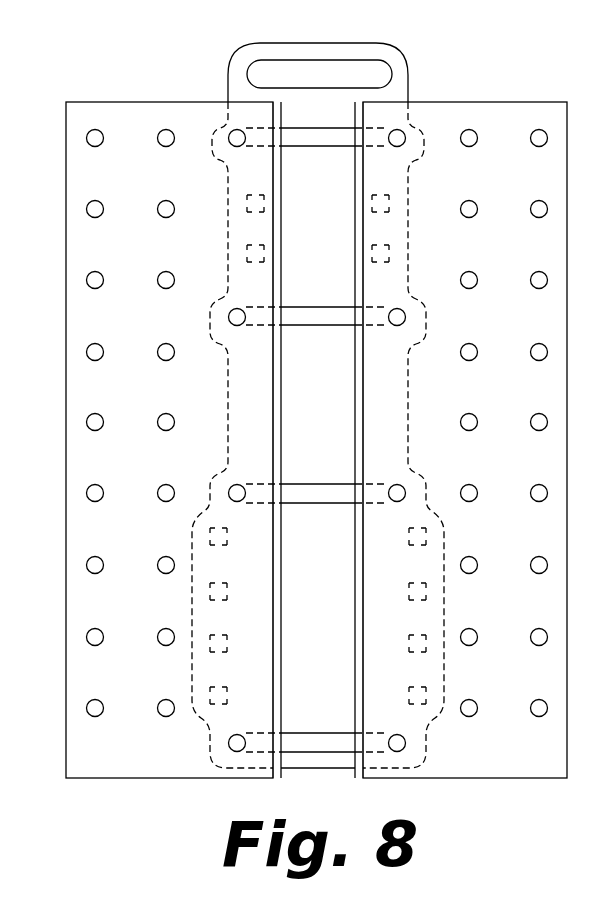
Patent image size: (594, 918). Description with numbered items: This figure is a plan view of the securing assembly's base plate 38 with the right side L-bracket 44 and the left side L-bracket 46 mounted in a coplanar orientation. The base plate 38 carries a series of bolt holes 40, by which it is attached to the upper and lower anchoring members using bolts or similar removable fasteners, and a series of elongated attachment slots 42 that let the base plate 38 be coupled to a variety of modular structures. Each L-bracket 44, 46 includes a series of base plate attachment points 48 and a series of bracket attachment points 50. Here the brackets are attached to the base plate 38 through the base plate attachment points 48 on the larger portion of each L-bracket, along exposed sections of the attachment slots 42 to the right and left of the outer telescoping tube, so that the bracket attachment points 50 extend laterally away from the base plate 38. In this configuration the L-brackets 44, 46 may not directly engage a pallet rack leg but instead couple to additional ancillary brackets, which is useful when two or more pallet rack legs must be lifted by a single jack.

The base plate 38 is at (300, 43).
The bolt holes 40 is at (372, 210).
The attachment slots 42 is at (323, 326).
The right side L-bracket 44 is at (510, 102).
The left side L-bracket 46 is at (88, 102).
The base plate attachment points 48 is at (231, 132).
The bracket attachment points 50 is at (158, 492).